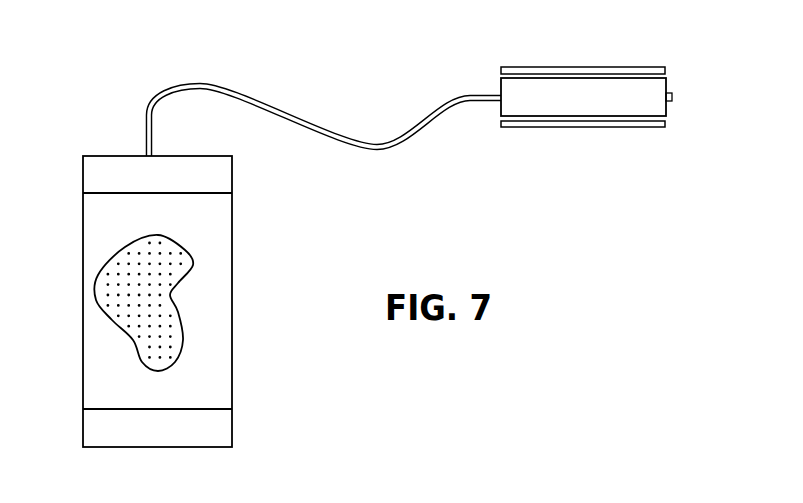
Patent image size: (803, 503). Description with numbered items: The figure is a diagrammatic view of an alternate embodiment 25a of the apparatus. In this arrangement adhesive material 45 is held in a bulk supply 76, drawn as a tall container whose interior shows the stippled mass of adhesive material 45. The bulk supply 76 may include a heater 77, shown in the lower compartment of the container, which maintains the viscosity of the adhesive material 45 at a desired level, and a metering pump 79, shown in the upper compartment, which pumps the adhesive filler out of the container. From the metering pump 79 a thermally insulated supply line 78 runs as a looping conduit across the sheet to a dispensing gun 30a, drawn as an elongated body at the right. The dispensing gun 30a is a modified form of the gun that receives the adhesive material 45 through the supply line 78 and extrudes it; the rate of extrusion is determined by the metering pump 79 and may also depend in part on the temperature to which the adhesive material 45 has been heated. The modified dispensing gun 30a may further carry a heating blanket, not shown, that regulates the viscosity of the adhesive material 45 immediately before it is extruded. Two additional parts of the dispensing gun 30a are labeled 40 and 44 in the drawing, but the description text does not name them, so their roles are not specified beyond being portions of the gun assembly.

The alternate embodiment of the apparatus 25a is at (400, 104).
The dispensing gun 30a is at (615, 141).
The dialyzer housing 40 is at (523, 100).
The heating elements 44 is at (582, 128).
The adhesive material 45 is at (153, 324).
The bulk supply 76 is at (202, 299).
The heater 77 is at (222, 428).
The thermally insulated supply line 78 is at (378, 150).
The metering pump 79 is at (189, 260).